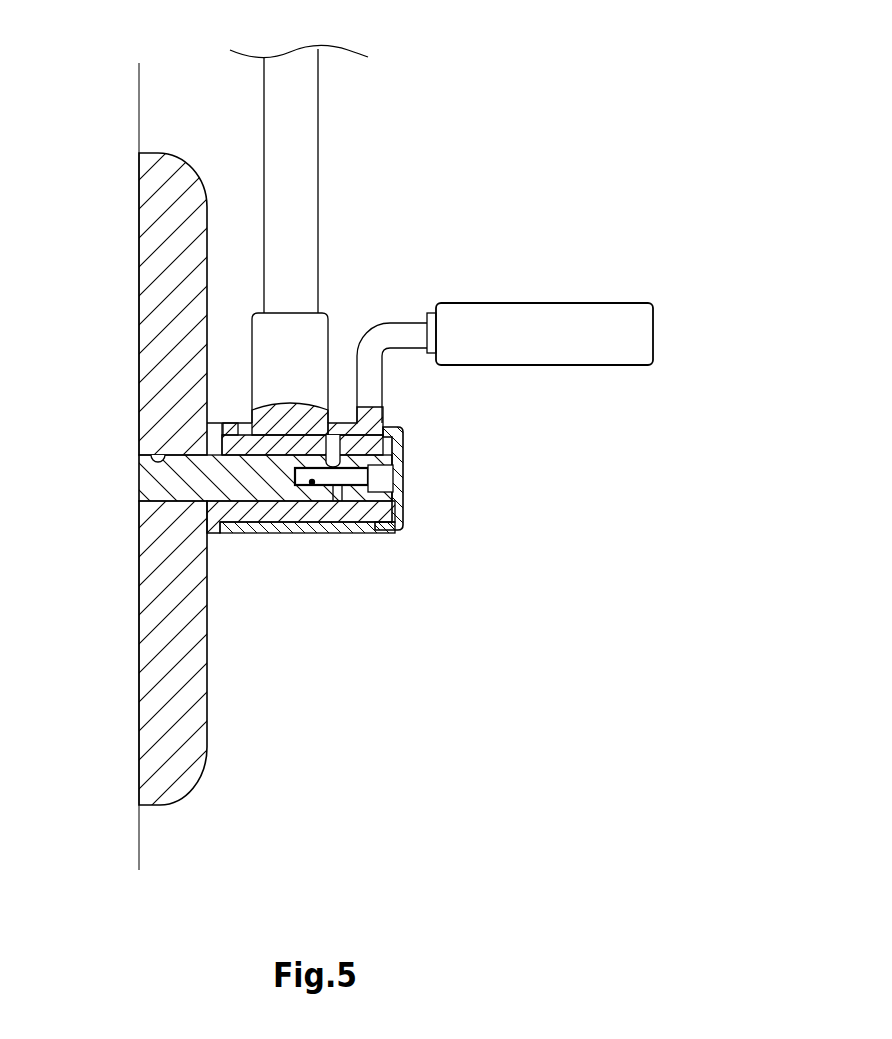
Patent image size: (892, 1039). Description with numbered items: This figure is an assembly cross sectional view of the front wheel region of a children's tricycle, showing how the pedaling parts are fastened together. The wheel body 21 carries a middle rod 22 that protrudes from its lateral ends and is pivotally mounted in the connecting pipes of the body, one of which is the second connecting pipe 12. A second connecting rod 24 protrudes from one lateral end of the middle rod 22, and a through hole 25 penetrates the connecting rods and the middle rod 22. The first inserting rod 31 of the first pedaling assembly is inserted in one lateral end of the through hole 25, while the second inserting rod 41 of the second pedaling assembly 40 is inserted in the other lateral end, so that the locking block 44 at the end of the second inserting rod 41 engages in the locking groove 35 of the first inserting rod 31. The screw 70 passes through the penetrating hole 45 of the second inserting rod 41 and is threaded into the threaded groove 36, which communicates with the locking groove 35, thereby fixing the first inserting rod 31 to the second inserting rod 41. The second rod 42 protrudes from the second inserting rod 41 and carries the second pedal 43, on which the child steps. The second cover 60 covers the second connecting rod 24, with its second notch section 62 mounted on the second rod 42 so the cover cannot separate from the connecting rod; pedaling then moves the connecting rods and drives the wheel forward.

The second connecting pipe 12 is at (266, 528).
The wheel body 21 is at (140, 238).
The middle rod 22 is at (265, 508).
The second connecting rod 24 is at (397, 533).
The through hole 25 is at (139, 455).
The first inserting rod 31 is at (165, 481).
The locking groove 35 is at (370, 537).
The threaded groove 36 is at (312, 483).
The second pedaling assembly 40 is at (509, 138).
The second inserting rod 41 is at (340, 462).
The second rod 42 is at (395, 332).
The second pedal 43 is at (533, 318).
The locking block 44 is at (333, 490).
The penetrating hole 45 is at (330, 465).
The second cover 60 is at (424, 523).
The second notch section 62 is at (385, 417).
The screw 70 is at (388, 480).